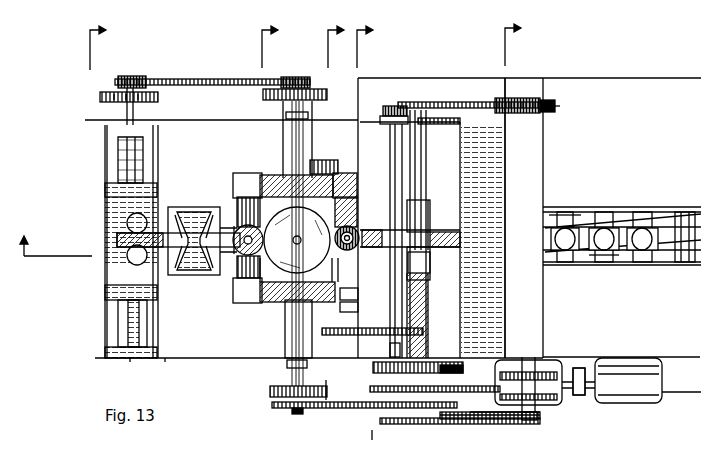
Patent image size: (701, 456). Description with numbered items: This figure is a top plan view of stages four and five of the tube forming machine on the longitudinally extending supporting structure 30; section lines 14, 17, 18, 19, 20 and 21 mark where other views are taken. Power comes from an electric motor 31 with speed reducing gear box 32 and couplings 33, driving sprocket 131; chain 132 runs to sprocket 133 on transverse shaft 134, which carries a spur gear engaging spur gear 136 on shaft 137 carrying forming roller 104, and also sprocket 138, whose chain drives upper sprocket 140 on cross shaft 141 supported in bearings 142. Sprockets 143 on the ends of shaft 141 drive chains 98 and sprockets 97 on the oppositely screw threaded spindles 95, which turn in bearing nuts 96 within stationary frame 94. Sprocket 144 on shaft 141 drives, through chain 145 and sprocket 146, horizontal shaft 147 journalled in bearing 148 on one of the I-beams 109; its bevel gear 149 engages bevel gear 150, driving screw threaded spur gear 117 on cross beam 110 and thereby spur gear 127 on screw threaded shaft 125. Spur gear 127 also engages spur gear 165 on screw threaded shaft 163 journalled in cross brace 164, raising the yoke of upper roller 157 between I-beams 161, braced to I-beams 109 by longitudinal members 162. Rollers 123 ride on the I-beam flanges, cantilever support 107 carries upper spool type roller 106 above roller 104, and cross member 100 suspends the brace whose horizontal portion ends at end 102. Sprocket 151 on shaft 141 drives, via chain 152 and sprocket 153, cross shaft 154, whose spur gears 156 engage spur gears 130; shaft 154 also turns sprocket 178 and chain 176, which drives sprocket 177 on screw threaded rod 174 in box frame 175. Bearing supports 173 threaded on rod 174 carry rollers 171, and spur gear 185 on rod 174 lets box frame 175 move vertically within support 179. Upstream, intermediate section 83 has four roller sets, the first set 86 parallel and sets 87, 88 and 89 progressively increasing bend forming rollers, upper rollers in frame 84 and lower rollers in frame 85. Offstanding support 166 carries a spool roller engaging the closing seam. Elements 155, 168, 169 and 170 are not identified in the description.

The section line 14- 14 is at (46, 246).
The section line 17- 17 is at (510, 37).
The section line 18- 18 is at (362, 39).
The section line 19- 19 is at (333, 39).
The section line 20- 20 is at (267, 39).
The section line 21- 21 is at (95, 40).
The supporting structure 30 is at (176, 118).
The electric motor 31 is at (628, 406).
The speed reducing gear box 32 is at (580, 398).
The couplings 33 is at (560, 406).
The intermediate section 83 is at (646, 208).
The frame 84 is at (630, 262).
The frame 85 is at (575, 264).
The first set of rollers 86 is at (682, 240).
The second set of rollers 87 is at (643, 212).
The third set of rollers 88 is at (603, 212).
The fourth set of rollers 89 is at (565, 212).
The stationary frame 94 is at (542, 348).
The screw threaded spindles 95 is at (518, 106).
The bearing nuts 96 is at (548, 114).
The sprockets 97 is at (553, 100).
The chains 98 is at (458, 102).
The cross member 100 is at (488, 260).
The end 102 is at (440, 236).
The forming roller 104 is at (432, 266).
The upper spool type roller 106 is at (432, 204).
The cantilever support 107 is at (368, 232).
The I-beams 109 is at (355, 180).
The cross beam 110 is at (355, 206).
The spur gear 117 is at (372, 440).
The rollers 123 is at (342, 162).
The screw threaded shaft 125 is at (296, 240).
The spur gear 127 is at (280, 262).
The spur gears 130 is at (266, 95).
The sprocket 131 is at (522, 420).
The chain 132 is at (486, 420).
The sprocket 133 is at (458, 422).
The shaft 134 is at (420, 437).
The spur gear 136 is at (430, 362).
The shaft 137 is at (439, 140).
The sprocket 138 is at (454, 378).
The upper sprocket 140 is at (306, 364).
The shaft 141 is at (416, 300).
The bearings 142 is at (374, 116).
The sprockets 143 is at (410, 116).
The sprocket 144 is at (416, 322).
The chain 145 is at (393, 345).
The sprocket 146 is at (368, 342).
The horizontal shaft 147 is at (372, 314).
The bearing 148 is at (372, 292).
The bevel gear 149 is at (316, 264).
The bevel gear 150 is at (338, 228).
The sprocket 151 is at (380, 402).
The chain 152 is at (342, 387).
The sprocket 153 is at (286, 400).
The cross shaft 154 is at (286, 334).
The clamp 155 is at (287, 364).
The spur gears 156 is at (310, 92).
The upper roller 157 is at (172, 212).
The I-beams 161 is at (244, 180).
The longitudinal members 162 is at (272, 180).
The screw threaded shaft 163 is at (240, 255).
The cross brace 164 is at (238, 292).
The spur gear 165 is at (196, 210).
The offstanding support 166 is at (205, 210).
The shaft 168 is at (175, 262).
The frame 169 is at (119, 407).
The frame 170 is at (164, 407).
The rollers 171 is at (130, 262).
The bearing supports 173 is at (110, 260).
The screw threaded rod 174 is at (128, 336).
The box frame 175 is at (120, 298).
The chain 176 is at (198, 82).
The sprocket 177 is at (152, 74).
The sprocket 178 is at (298, 80).
The support 179 is at (120, 357).
The spur gear 185 is at (100, 98).